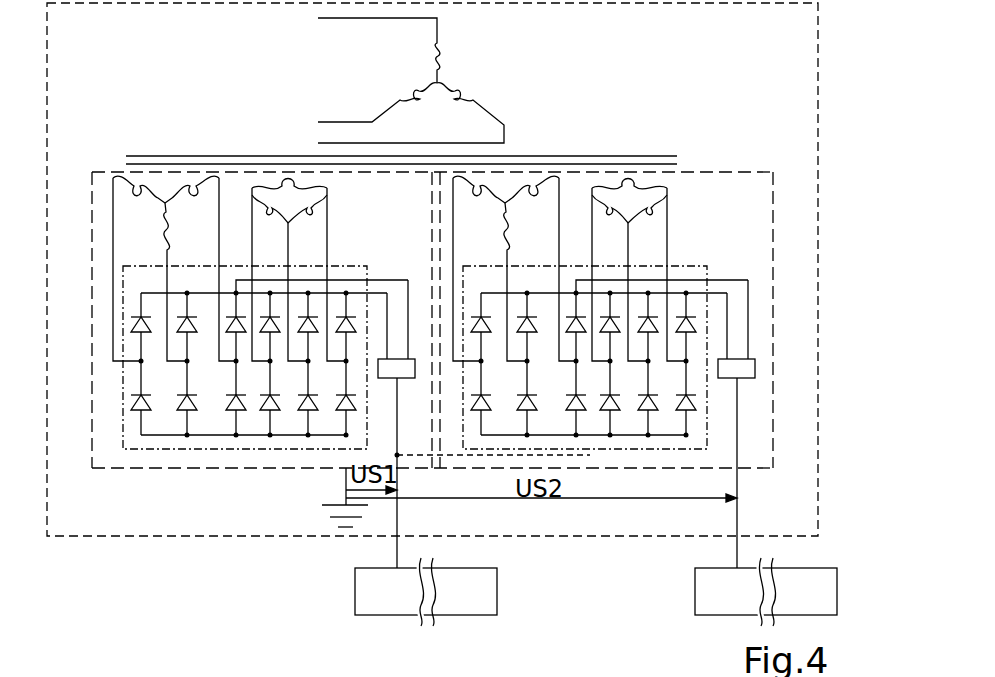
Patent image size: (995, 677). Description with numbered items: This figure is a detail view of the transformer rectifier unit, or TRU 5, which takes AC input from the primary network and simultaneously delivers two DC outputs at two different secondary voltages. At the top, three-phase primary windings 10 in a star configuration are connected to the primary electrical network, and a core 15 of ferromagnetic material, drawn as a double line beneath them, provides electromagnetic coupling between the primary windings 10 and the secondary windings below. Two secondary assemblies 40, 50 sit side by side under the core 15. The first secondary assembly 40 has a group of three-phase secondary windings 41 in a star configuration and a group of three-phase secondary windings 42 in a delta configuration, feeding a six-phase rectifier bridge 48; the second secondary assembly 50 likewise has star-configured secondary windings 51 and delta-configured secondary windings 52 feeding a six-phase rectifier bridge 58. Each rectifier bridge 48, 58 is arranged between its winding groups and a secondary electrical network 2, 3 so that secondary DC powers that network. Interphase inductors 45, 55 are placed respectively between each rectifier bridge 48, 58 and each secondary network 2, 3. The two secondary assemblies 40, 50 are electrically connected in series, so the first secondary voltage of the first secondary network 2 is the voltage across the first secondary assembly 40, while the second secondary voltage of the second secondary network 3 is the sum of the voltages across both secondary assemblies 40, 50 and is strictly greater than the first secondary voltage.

The first secondary network 2 is at (355, 583).
The second secondary network 3 is at (695, 583).
The TRU 5 is at (92, 537).
The three-phase primary windings 10 is at (270, 62).
The core 15 is at (645, 155).
The first secondary assembly 40 is at (250, 337).
The three-phase secondary windings 41 is at (130, 212).
The three-phase secondary windings 42 is at (350, 210).
The interphase inductor 45 is at (415, 369).
The six-phase rectifier bridge 48 is at (172, 449).
The second secondary assembly 50 is at (773, 205).
The three-phase secondary windings 51 is at (468, 214).
The three-phase secondary windings 52 is at (625, 353).
The interphase inductor 55 is at (755, 369).
The six-phase rectifier bridge 58 is at (590, 455).